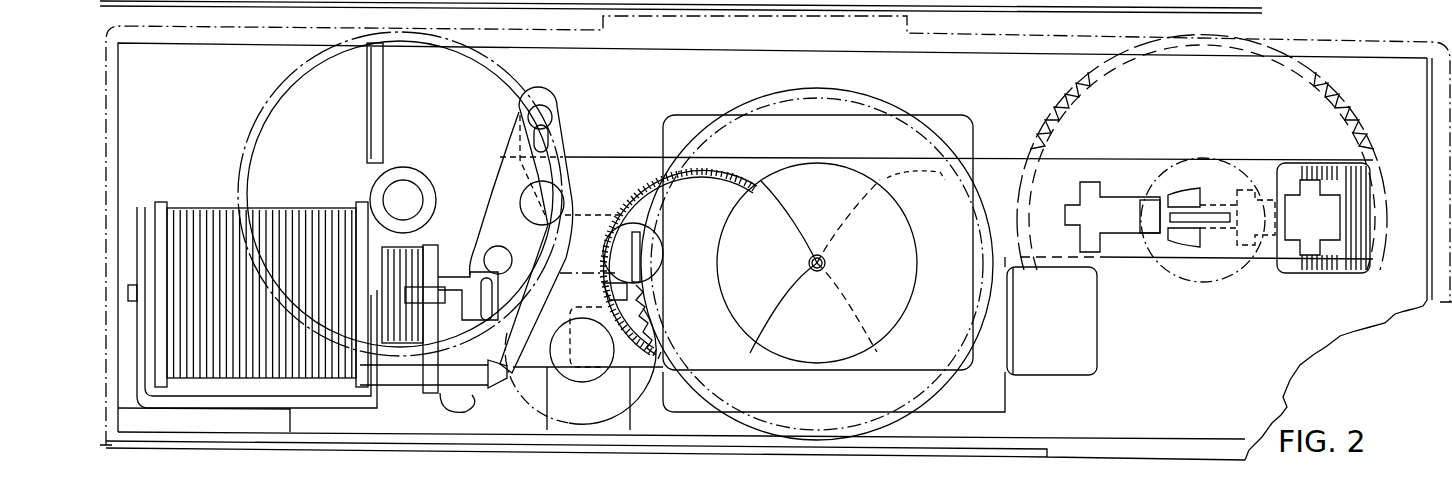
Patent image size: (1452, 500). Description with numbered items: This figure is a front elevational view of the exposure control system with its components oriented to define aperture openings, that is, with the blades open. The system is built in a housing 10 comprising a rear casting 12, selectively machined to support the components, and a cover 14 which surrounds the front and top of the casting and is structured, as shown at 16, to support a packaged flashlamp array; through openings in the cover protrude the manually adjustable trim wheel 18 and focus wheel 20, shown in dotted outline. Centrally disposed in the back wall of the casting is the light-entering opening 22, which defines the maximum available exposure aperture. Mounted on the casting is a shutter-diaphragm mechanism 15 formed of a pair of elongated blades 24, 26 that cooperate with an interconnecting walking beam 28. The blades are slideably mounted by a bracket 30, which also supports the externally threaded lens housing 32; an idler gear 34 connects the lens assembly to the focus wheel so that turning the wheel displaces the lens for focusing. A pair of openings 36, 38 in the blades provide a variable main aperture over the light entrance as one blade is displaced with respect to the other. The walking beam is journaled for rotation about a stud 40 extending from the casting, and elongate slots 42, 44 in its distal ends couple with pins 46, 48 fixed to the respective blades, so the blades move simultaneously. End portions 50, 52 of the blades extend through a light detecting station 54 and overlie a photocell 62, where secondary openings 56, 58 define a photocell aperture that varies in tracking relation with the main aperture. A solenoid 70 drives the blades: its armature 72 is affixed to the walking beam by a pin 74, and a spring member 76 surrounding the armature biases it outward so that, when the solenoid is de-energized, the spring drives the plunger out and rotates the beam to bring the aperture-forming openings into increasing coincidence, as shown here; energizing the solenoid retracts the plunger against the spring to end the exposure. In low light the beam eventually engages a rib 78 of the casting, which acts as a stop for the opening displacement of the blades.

The housing 10 is at (1340, 350).
The rear casting 12 is at (1262, 8).
The cover 14 is at (1330, 50).
The shutter-diaphragm mechanism 15 is at (870, 140).
The cover structure for flashlamp array 16 is at (912, 25).
The trim wheel 18 is at (1050, 110).
The focus wheel 20 is at (497, 90).
The light-entering opening 22 is at (830, 163).
The blade 24 is at (995, 367).
The blade 26 is at (1065, 378).
The walking beam 28 is at (500, 162).
The bracket 30 is at (698, 115).
The lens housing 32 is at (797, 95).
The idler gear 34 is at (527, 402).
The aperture opening 36 is at (718, 160).
The aperture opening 38 is at (903, 170).
The stud 40 is at (480, 247).
The elongate slot 42 is at (444, 410).
The elongate slot 44 is at (552, 103).
The pin 46 is at (437, 401).
The pin 48 is at (549, 124).
The blade end portion 50 is at (1150, 160).
The blade end portion 52 is at (1300, 273).
The light detecting station 54 is at (1226, 283).
The secondary opening 56 is at (1130, 183).
The secondary opening 58 is at (1293, 183).
The photocell 62 is at (1207, 152).
The solenoid 70 is at (182, 210).
The solenoid armature 72 is at (421, 274).
The pin 74 is at (490, 253).
The spring member 76 is at (393, 233).
The rib 78 is at (376, 125).